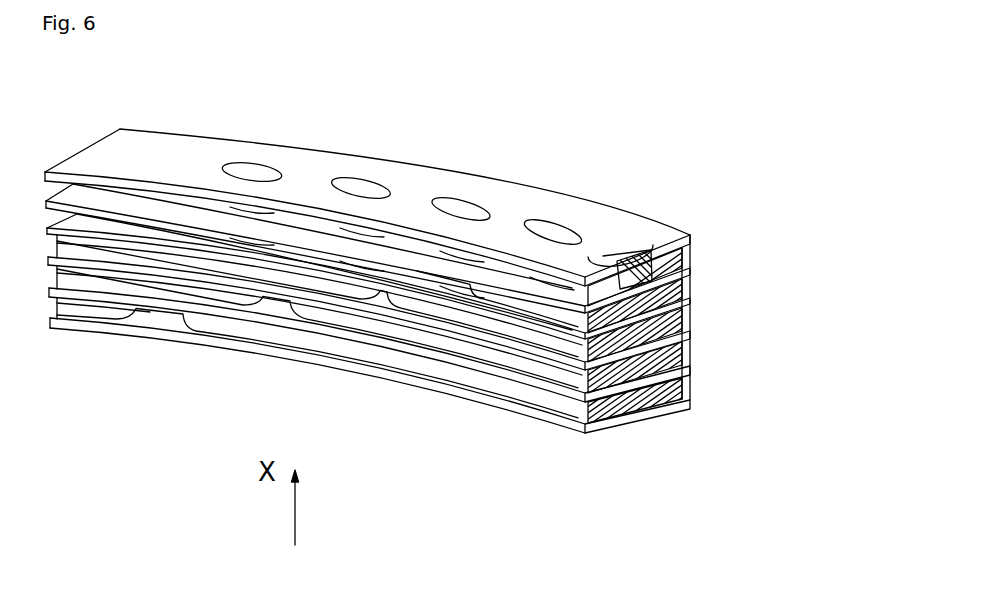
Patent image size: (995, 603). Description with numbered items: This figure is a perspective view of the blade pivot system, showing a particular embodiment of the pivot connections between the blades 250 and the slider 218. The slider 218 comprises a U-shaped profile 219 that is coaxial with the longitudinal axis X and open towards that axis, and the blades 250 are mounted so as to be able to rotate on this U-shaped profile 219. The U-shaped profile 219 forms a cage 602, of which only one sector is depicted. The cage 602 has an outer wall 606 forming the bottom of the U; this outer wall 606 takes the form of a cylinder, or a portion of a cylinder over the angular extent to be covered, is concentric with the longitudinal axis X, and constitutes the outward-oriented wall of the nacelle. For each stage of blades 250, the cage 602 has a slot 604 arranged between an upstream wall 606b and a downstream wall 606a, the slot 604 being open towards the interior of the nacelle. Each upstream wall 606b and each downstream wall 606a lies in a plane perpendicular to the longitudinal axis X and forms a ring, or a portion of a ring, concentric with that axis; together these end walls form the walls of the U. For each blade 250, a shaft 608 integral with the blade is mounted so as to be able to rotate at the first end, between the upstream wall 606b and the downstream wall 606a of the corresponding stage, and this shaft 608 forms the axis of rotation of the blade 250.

The cage 602 is at (313, 165).
The slider 218 is at (503, 172).
The U-shaped profile 219 is at (705, 177).
The shaft 608 is at (628, 248).
The outer wall 606 is at (693, 337).
The slot 604 is at (157, 319).
The blade 250 is at (248, 328).
The upstream wall 606b is at (472, 368).
The downstream wall 606a is at (548, 410).